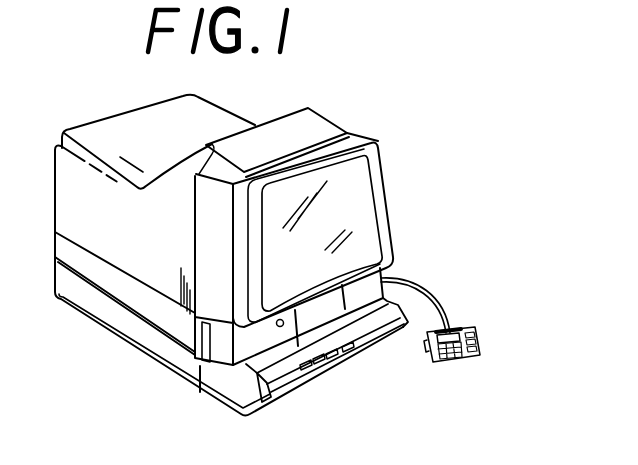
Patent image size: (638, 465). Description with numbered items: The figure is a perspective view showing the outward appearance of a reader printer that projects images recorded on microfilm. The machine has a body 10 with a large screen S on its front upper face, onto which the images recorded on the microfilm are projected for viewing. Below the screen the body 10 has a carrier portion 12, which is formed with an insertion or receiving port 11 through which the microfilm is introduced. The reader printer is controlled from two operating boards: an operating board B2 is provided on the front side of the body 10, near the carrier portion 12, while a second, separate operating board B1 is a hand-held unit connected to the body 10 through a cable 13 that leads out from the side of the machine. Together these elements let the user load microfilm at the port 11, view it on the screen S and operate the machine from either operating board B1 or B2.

The body 10 is at (394, 172).
The screen S is at (330, 210).
The insertion or receiving port 11 is at (207, 343).
The carrier portion 12 is at (270, 375).
The cable 13 is at (420, 285).
The operating board B1 is at (480, 340).
The operating board B2 is at (333, 356).